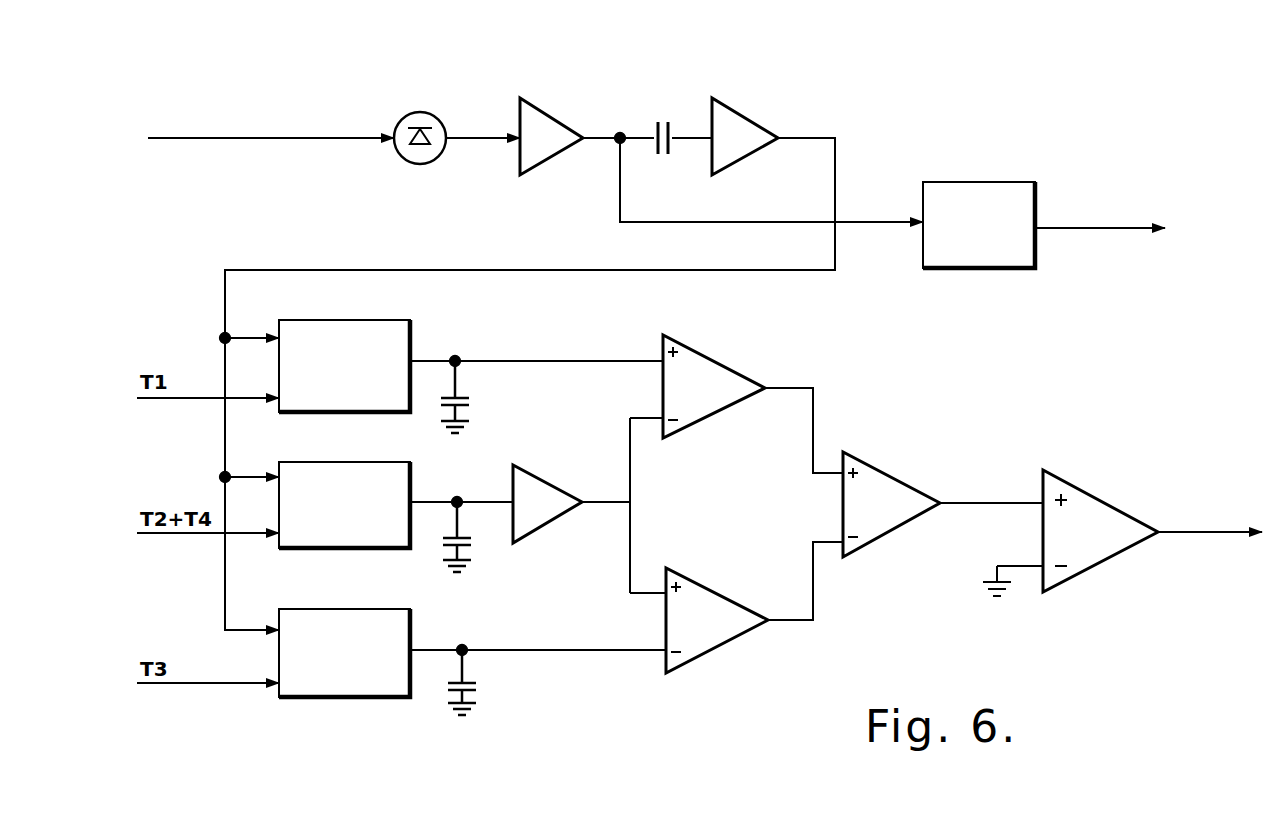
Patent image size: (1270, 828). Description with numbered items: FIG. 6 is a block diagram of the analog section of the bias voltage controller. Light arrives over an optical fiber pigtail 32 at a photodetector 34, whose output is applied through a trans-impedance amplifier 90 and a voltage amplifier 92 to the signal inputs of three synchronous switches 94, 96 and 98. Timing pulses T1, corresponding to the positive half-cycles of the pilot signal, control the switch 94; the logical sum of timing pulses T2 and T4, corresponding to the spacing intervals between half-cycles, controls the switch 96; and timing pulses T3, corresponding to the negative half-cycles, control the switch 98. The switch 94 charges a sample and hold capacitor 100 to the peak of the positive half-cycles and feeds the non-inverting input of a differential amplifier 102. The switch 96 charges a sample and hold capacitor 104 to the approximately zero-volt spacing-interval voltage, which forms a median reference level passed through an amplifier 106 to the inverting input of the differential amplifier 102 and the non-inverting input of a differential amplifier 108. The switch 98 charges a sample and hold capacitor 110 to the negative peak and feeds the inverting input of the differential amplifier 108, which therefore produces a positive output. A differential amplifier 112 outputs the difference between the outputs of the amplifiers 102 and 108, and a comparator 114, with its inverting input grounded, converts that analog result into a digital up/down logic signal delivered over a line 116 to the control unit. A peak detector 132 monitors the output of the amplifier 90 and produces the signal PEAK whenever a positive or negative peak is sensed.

The optical fiber pigtail 32 is at (247, 135).
The photodetector 34 is at (441, 117).
The trans-impedance amplifier 90 is at (550, 109).
The voltage amplifier 92 is at (733, 110).
The synchronous switch 94 is at (390, 320).
The synchronous switch 96 is at (381, 462).
The synchronous switch 98 is at (381, 609).
The sample and hold capacitor 100 is at (469, 403).
The differential amplifier 102 is at (663, 348).
The sample and hold capacitor 104 is at (470, 544).
The amplifier 106 is at (558, 487).
The differential amplifier 108 is at (716, 593).
The sample and hold capacitor 110 is at (475, 690).
The differential amplifier 112 is at (897, 480).
The comparator 114 is at (1097, 498).
The line 116 is at (1205, 535).
The peak detector 132 is at (925, 182).